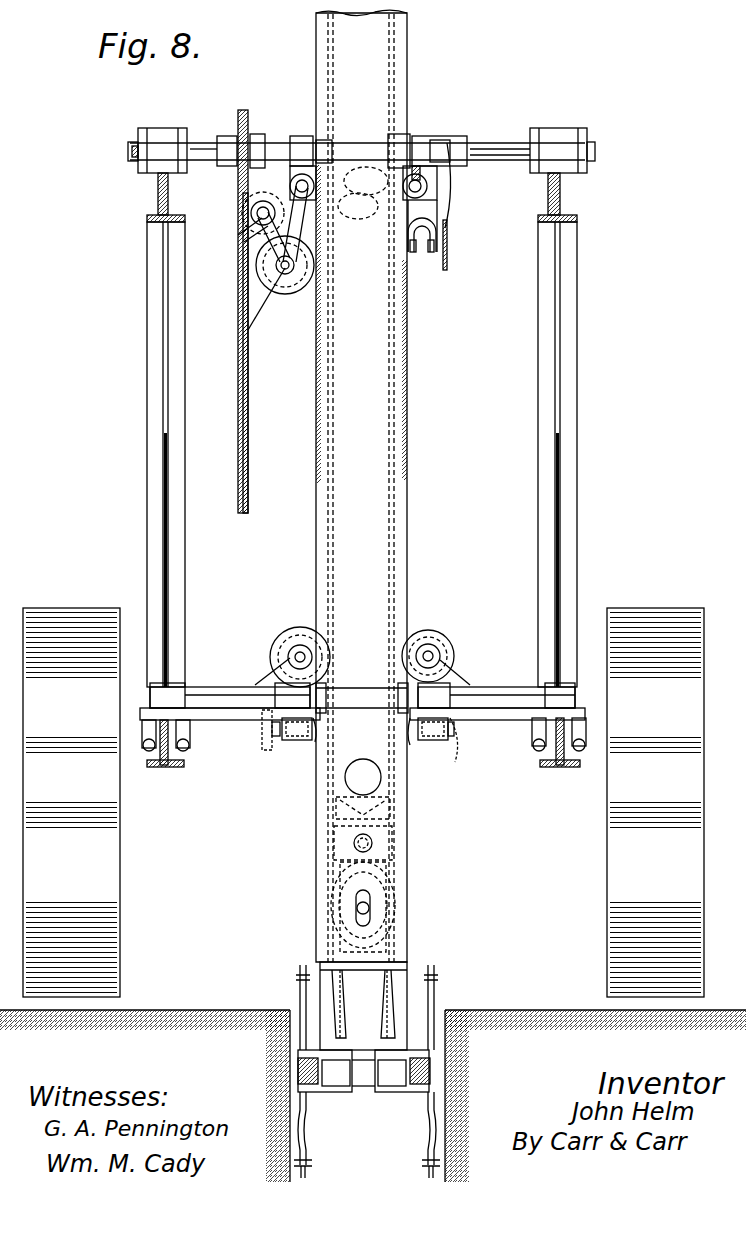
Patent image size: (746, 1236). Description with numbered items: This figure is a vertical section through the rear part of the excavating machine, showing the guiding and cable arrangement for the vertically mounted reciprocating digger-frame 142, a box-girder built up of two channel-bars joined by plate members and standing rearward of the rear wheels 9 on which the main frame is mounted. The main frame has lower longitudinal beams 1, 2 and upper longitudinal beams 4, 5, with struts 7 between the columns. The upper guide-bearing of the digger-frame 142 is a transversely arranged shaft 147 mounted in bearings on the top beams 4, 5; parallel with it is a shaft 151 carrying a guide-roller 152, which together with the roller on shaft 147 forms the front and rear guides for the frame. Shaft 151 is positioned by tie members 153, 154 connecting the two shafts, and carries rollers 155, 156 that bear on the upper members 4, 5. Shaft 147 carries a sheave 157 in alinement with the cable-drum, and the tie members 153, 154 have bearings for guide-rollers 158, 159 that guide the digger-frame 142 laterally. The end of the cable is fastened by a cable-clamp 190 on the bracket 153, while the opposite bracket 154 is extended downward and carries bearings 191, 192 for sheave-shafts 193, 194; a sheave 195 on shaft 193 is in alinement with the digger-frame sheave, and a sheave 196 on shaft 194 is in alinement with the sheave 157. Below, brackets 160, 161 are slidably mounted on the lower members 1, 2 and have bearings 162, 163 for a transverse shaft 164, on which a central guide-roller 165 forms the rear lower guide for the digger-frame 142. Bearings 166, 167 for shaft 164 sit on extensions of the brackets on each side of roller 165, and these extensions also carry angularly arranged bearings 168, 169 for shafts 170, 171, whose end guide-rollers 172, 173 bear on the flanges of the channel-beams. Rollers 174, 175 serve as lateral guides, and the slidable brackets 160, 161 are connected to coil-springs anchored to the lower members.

The longitudinal beam 1 is at (160, 768).
The longitudinal beam 2 is at (562, 768).
The longitudinal beam 4 is at (157, 196).
The longitudinal beam 5 is at (562, 198).
The strut 7 is at (150, 448).
The wheel 9 is at (122, 870).
The digger frame 142 is at (367, 594).
The shaft 147 is at (490, 142).
The shaft 151 is at (498, 165).
The guide-roller 152 is at (345, 150).
The tie member 153 is at (432, 138).
The tie member 154 is at (268, 136).
The roller 155 is at (552, 146).
The roller 156 is at (153, 146).
The sheave 157 is at (228, 120).
The guide-roller 158 is at (400, 176).
The guide-roller 159 is at (322, 198).
The bracket 160 is at (536, 720).
The bracket 161 is at (184, 722).
The bearing 162 is at (548, 690).
The bearing 163 is at (178, 695).
The shaft 164 is at (480, 694).
The guide-roller 165 is at (360, 692).
The bearing 166 is at (440, 698).
The bearing 167 is at (290, 698).
The bearing 168 is at (434, 742).
The bearing 169 is at (292, 742).
The shaft 170 is at (452, 744).
The shaft 171 is at (274, 742).
The guide-roller 172 is at (412, 745).
The guide-roller 173 is at (315, 745).
The roller 174 is at (446, 640).
The roller 175 is at (296, 645).
The cable-clamp 190 is at (446, 230).
The bearing 191 is at (285, 275).
The bearing 192 is at (262, 222).
The sheave-shaft 193 is at (242, 299).
The sheave-shaft 194 is at (262, 228).
The sheave 195 is at (292, 266).
The sheave 196 is at (250, 212).